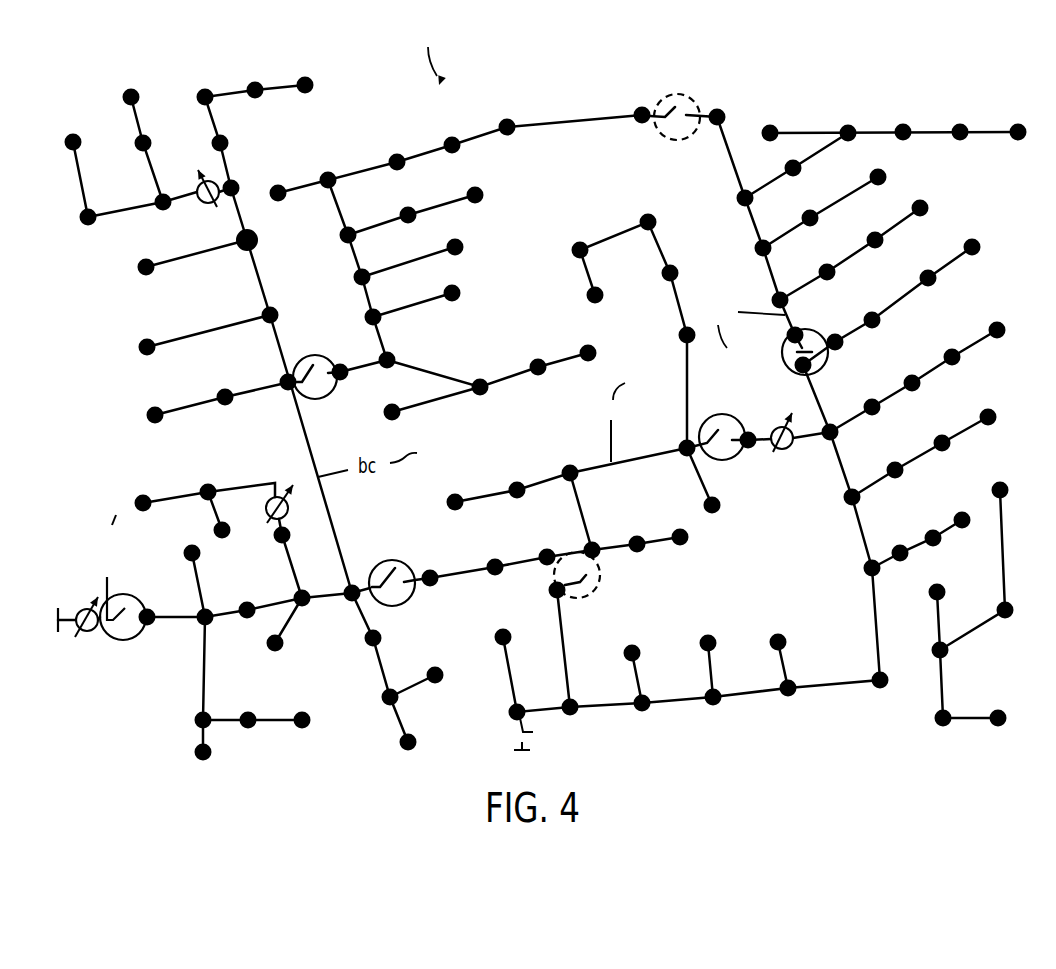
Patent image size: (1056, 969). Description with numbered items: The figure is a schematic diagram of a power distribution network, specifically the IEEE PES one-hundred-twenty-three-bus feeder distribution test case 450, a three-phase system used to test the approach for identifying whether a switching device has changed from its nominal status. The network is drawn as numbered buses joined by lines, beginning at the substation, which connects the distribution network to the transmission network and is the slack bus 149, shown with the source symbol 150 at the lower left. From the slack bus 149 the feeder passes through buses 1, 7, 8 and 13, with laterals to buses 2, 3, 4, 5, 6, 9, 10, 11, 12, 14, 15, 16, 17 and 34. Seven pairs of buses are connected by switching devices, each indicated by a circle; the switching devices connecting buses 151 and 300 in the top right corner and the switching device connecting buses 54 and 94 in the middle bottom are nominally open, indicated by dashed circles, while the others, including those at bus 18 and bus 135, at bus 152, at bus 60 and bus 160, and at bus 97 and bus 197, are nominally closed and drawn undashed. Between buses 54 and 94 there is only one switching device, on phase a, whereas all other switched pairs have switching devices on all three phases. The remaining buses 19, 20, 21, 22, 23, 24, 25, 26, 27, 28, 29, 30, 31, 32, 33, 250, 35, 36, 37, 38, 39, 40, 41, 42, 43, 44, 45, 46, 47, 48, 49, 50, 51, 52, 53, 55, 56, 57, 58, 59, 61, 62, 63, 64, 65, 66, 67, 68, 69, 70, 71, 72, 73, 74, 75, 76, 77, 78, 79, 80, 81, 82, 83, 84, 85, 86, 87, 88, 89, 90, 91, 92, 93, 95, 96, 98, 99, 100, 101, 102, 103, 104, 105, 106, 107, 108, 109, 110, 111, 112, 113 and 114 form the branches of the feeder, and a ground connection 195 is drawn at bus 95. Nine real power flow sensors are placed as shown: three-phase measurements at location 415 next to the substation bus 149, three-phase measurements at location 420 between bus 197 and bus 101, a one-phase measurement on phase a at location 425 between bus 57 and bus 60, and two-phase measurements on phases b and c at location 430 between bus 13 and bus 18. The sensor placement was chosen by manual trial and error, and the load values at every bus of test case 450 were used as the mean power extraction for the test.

The substation source with voltage regulator 150 is at (96, 608).
The bus 149 is at (157, 631).
The bus node 1 is at (202, 626).
The bus node 2 is at (184, 554).
The bus node 3 is at (195, 725).
The bus node 4 is at (195, 760).
The bus node 5 is at (246, 735).
The bus node 6 is at (299, 735).
The bus node 7 is at (244, 597).
The bus node 8 is at (295, 589).
The bus node 9 with voltage regulator 9 is at (285, 513).
The bus node 10 is at (224, 543).
The bus node 11 is at (145, 492).
The bus node 12 is at (287, 645).
The bus 13 is at (341, 582).
The bus node 14 is at (207, 479).
The bus node 15 is at (378, 699).
The bus node 16 is at (397, 742).
The bus node 17 is at (428, 663).
The bus 18 is at (303, 384).
The bus node 19 is at (223, 385).
The bus node 20 is at (153, 403).
The bus node 21 is at (279, 308).
The bus node 22 is at (145, 335).
The bus node 23 is at (258, 237).
The bus node 24 is at (148, 282).
The bus node 25 with voltage regulator 25 is at (222, 180).
The bus node 26 is at (151, 194).
The bus node 27 is at (79, 211).
The bus node 28 is at (210, 140).
The bus node 29 is at (194, 92).
The bus node 30 is at (251, 105).
The bus node 31 is at (134, 145).
The bus node 32 is at (121, 92).
The bus node 33 is at (69, 128).
The bus node 34 is at (362, 635).
The bus node 35 is at (387, 375).
The bus node 36 is at (477, 375).
The bus node 37 is at (389, 427).
The bus node 38 is at (531, 357).
The bus node 39 is at (580, 344).
The bus node 40 is at (362, 317).
The bus node 41 is at (447, 280).
The bus node 42 is at (349, 275).
The bus node 43 is at (453, 233).
The bus node 44 is at (334, 229).
The bus node 45 is at (399, 207).
The bus node 46 is at (464, 184).
The bus node 47 is at (321, 171).
The bus node 48 is at (273, 181).
The bus node 49 is at (388, 151).
The bus node 50 is at (443, 137).
The bus node 51 is at (515, 118).
The bus node 52 is at (486, 554).
The bus node 53 is at (537, 545).
The bus 54 is at (581, 542).
The bus node 55 is at (635, 559).
The bus node 56 is at (683, 552).
The bus 57 is at (555, 467).
The bus node 58 is at (509, 481).
The bus node 59 is at (449, 490).
The bus 60 is at (674, 439).
The bus node 61 is at (699, 505).
The bus node 62 is at (676, 334).
The bus node 63 is at (658, 268).
The bus node 64 is at (639, 216).
The bus node 65 is at (582, 238).
The bus node 66 is at (584, 292).
The bus node 67 is at (819, 421).
The bus node 68 is at (862, 397).
The bus node 69 is at (901, 372).
The bus node 70 is at (944, 346).
The bus node 71 is at (989, 319).
The bus node 72 is at (841, 489).
The bus node 73 is at (887, 459).
The bus node 74 is at (934, 435).
The bus node 75 is at (978, 407).
The bus node 76 is at (749, 593).
The bus node 77 is at (892, 542).
The bus node 78 is at (923, 528).
The bus node 79 is at (955, 508).
The bus node 80 is at (927, 588).
The bus node 81 is at (930, 643).
The bus node 82 is at (932, 712).
The bus node 83 is at (996, 706).
The bus node 84 is at (993, 601).
The bus node 85 is at (1011, 487).
The bus node 86 is at (881, 696).
The bus node 87 is at (787, 704).
The bus node 88 is at (765, 640).
The bus node 89 is at (712, 713).
The bus node 90 is at (696, 642).
The bus node 91 is at (639, 718).
The bus node 92 is at (620, 654).
The bus node 93 is at (571, 724).
The bus 94 is at (545, 596).
The bus node 95 is at (502, 710).
The bus node 96 is at (492, 630).
The bus node 97 is at (790, 366).
The bus node 98 is at (828, 329).
The bus node 99 is at (862, 313).
The bus node 100 is at (912, 267).
The bus 101 is at (765, 293).
The bus node 102 is at (815, 259).
The bus node 103 is at (863, 228).
The bus node 104 is at (908, 202).
The bus node 105 is at (748, 245).
The bus node 106 is at (795, 210).
The bus node 107 is at (880, 164).
The bus node 108 is at (731, 192).
The bus node 109 is at (778, 160).
The bus node 110 is at (846, 121).
The bus node 111 is at (768, 121).
The bus node 112 is at (900, 120).
The bus node 113 is at (958, 120).
The bus node 114 is at (1015, 120).
The bus node 135 is at (351, 386).
The bus 151 is at (643, 126).
The bus node 152 (switch) 152 is at (424, 562).
The bus node 160 with voltage regulator 160 is at (768, 426).
The ground node 195 is at (537, 742).
The bus 197 is at (779, 332).
The bus node 250 is at (321, 85).
The bus 300 is at (712, 137).
The location 415 is at (113, 506).
The location 420 is at (743, 337).
The location 425 is at (631, 417).
The location 430 is at (422, 450).
The IEEE PES 123-bus feeder distribution test case 450 is at (698, 139).